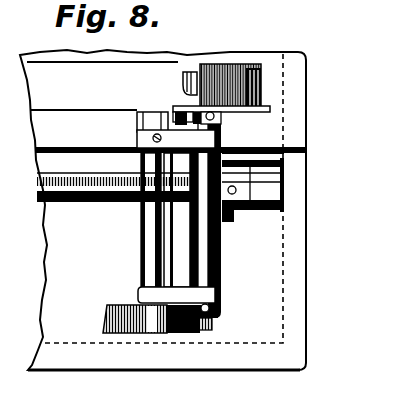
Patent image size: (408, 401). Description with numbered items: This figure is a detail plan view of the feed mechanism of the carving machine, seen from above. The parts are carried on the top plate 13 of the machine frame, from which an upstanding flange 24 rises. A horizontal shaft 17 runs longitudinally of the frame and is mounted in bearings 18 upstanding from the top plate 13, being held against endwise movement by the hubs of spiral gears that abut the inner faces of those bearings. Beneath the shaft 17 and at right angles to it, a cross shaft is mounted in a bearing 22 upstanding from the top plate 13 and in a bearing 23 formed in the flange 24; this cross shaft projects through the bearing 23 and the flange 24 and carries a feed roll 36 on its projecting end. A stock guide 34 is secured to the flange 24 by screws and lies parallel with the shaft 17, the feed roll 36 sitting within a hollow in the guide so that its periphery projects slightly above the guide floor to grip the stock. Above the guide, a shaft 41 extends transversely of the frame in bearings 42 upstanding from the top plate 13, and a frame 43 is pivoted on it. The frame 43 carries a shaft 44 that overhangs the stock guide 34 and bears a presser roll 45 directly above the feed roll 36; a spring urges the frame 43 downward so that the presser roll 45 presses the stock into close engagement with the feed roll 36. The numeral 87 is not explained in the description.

The top plate 13 is at (163, 210).
The horizontal shaft 17 is at (102, 200).
The bearings 18 is at (268, 212).
The bearing 22 is at (222, 247).
The bearing 23 is at (306, 155).
The upstanding flange 24 is at (85, 131).
The stock guide 34 is at (102, 86).
The feed roll 36 is at (170, 107).
The shaft 41 is at (152, 252).
The bearings 42 is at (155, 115).
The frame 43 is at (220, 300).
The shaft 44 is at (232, 214).
The presser roll 45 is at (215, 67).
The bracket 87 is at (192, 70).